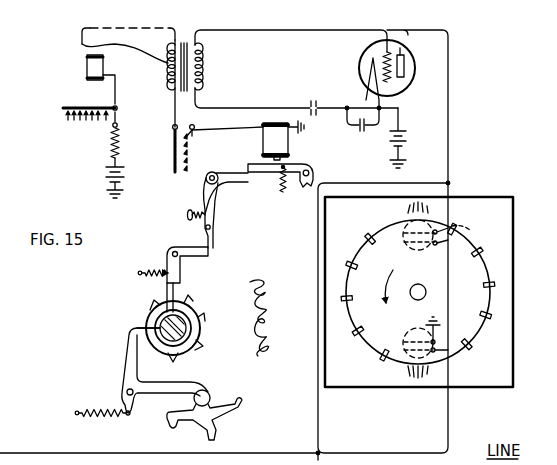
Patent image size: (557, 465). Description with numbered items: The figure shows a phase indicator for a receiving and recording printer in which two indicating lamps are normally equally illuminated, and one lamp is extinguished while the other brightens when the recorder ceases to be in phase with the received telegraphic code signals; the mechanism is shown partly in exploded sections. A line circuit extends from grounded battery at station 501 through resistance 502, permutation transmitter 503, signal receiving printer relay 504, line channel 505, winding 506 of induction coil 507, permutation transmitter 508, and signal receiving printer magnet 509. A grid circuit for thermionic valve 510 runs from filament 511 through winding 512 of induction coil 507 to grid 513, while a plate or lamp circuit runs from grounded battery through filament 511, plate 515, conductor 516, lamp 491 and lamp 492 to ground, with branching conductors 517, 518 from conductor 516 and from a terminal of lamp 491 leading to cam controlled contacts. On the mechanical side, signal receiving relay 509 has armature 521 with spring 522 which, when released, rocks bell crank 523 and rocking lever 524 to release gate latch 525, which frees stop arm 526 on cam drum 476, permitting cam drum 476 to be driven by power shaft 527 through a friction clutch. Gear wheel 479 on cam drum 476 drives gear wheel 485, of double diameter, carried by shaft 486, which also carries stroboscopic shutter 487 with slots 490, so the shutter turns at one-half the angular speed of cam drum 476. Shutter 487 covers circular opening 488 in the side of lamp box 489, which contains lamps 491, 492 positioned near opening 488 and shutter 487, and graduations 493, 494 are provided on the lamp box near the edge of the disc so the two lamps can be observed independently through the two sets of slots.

The cam drum 476 is at (160, 327).
The gear wheel 479 is at (248, 297).
The gear wheel 485 is at (268, 356).
The shaft 486 is at (434, 280).
The stroboscopic shutter 487 is at (385, 241).
The circular opening 488 is at (350, 263).
The lamp box 489 is at (422, 388).
The slots 490 is at (476, 254).
The lamp 491 is at (446, 232).
The lamp 492 is at (395, 371).
The graduations 493 is at (433, 212).
The graduations 494 is at (436, 372).
The station 501 is at (68, 93).
The resistance 502 is at (113, 146).
The permutation transmitter 503 is at (78, 130).
The signal receiving printer relay 504 is at (87, 73).
The line channel 505 is at (82, 41).
The winding of induction coil 506 is at (80, 50).
The induction coil 507 is at (186, 92).
The permutation transmitter 508 is at (173, 154).
The signal receiving printer magnet 509 is at (271, 123).
The thermionic valve 510 is at (359, 77).
The filament 511 is at (384, 86).
The winding of induction coil 512 is at (204, 70).
The grid 513 is at (368, 54).
The plate 515 is at (406, 63).
The conductor 516 is at (448, 148).
The branching conductor 517 is at (427, 183).
The branching conductor 518 is at (468, 420).
The armature 521 is at (253, 166).
The spring 522 is at (285, 190).
The bell crank 523 is at (232, 179).
The rocking lever 524 is at (182, 230).
The gate latch 525 is at (173, 251).
The stop arm 526 is at (167, 292).
The power shaft 527 is at (165, 320).